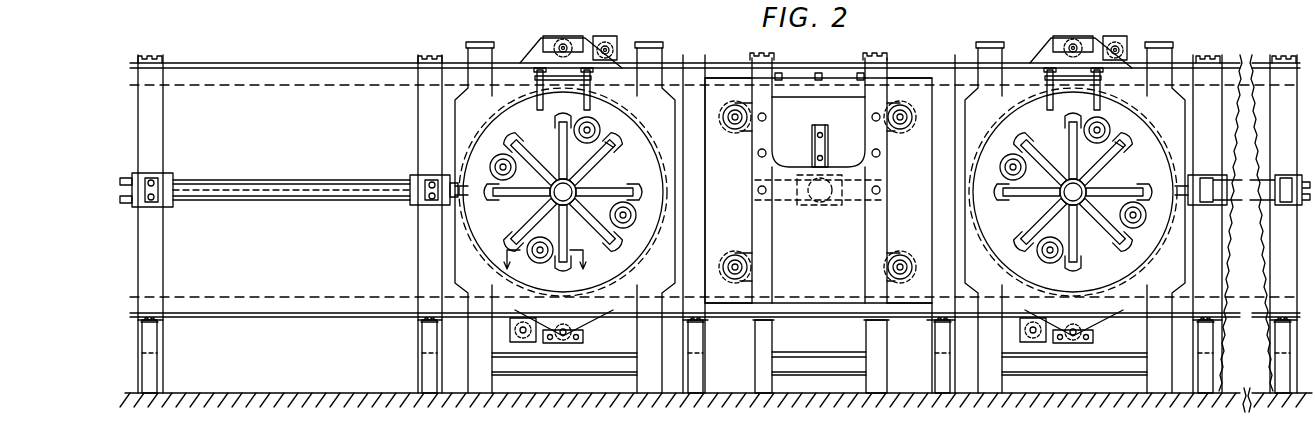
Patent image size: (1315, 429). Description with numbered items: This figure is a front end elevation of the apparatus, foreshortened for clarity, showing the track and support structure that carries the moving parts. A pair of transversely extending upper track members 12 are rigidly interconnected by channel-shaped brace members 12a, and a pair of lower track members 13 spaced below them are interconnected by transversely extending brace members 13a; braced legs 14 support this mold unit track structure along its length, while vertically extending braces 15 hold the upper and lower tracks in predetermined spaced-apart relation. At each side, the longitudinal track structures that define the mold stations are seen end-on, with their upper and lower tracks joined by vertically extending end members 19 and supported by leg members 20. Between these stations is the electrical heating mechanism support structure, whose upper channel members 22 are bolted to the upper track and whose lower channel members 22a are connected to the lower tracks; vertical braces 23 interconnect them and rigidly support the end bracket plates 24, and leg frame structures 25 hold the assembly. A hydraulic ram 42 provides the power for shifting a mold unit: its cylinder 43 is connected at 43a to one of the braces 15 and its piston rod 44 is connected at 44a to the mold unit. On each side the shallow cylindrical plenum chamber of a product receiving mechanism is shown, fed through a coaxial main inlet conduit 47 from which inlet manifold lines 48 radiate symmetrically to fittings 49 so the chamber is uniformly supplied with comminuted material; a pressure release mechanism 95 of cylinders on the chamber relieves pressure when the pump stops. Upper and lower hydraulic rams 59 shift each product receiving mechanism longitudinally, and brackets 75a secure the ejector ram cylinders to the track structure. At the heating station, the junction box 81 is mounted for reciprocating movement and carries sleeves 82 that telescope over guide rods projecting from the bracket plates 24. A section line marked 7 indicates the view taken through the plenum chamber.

The upper track members 12 is at (305, 80).
The brace members 12a is at (165, 58).
The lower track members 13 is at (300, 282).
The brace members 13a is at (165, 325).
The braced legs 14 is at (165, 378).
The vertically extending braces 15 is at (153, 251).
The end members 19 is at (1196, 245).
The leg members 20 is at (645, 383).
The channel members 22 is at (863, 60).
The lower channel members 22a is at (866, 322).
The vertical braces 23 is at (872, 97).
The end bracket plates 24 is at (876, 171).
The leg frame structures 25 is at (865, 384).
The hydraulic ram 42 is at (297, 178).
The cylinder 43 is at (305, 190).
The cylinder connection 43a is at (165, 176).
The piston rod 44 is at (442, 203).
The piston rod connection 44a is at (425, 176).
The main inlet conduit 47 is at (548, 198).
The inlet manifold lines 48 is at (556, 152).
The fittings 49 is at (612, 146).
The hydraulic rams 59 is at (1074, 35).
The brackets 75a is at (1120, 40).
The junction box 81 is at (773, 190).
The sleeves 82 is at (732, 130).
The pressure release mechanism 95 is at (606, 132).
The section line 7- 7 is at (554, 265).